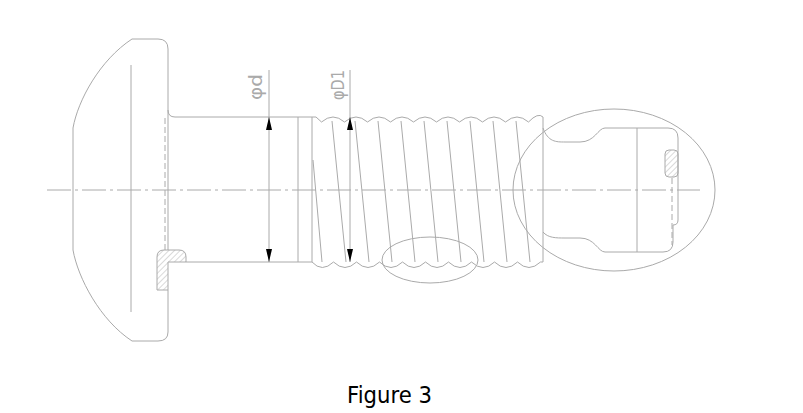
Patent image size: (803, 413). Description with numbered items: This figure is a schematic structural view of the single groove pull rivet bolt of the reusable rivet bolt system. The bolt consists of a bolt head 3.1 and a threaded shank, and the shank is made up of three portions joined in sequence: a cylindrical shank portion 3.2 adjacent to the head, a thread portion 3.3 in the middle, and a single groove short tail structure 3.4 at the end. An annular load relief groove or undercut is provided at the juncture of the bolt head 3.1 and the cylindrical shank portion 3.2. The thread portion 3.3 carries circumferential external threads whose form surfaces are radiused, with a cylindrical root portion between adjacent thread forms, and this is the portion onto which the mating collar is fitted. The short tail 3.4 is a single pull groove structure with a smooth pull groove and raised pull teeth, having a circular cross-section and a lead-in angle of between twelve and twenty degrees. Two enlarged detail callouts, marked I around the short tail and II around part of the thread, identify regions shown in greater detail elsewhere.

The bolt head 3.1 is at (147, 265).
The cylindrical shank portion 3.2 is at (226, 263).
The thread portion 3.3 is at (443, 263).
The single groove short tail structure 3.4 is at (603, 223).
The detail view I marker I is at (665, 261).
The detail view II marker II is at (448, 281).